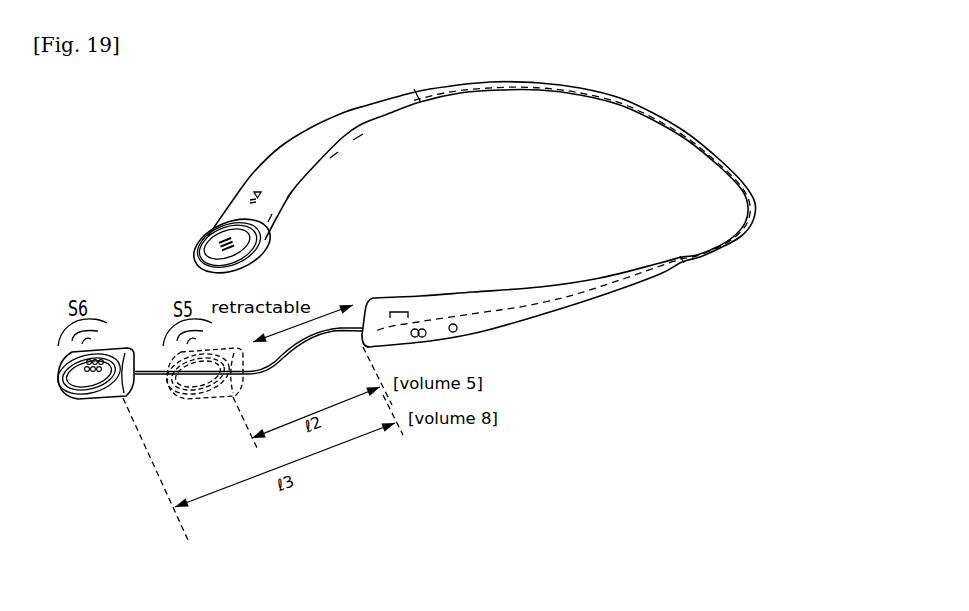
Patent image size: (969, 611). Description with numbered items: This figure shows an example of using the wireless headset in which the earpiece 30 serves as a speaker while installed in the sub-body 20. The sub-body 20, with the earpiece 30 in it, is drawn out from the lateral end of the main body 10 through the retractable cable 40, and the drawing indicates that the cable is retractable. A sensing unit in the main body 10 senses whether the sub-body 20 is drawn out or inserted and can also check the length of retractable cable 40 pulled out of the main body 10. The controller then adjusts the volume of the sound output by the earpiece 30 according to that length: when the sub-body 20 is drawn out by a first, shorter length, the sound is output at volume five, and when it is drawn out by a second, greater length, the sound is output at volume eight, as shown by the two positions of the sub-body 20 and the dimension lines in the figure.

The main body 10 is at (617, 282).
The sub-body 20 is at (113, 394).
The earpiece 30 is at (90, 372).
The retractable cable 40 is at (304, 349).